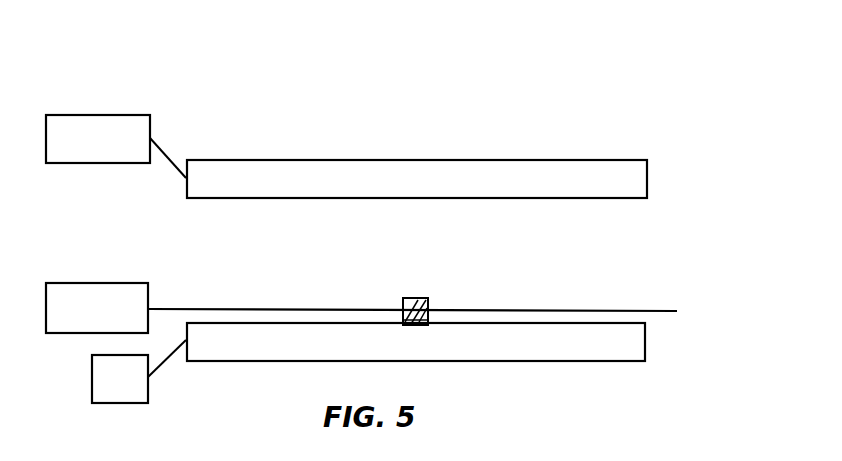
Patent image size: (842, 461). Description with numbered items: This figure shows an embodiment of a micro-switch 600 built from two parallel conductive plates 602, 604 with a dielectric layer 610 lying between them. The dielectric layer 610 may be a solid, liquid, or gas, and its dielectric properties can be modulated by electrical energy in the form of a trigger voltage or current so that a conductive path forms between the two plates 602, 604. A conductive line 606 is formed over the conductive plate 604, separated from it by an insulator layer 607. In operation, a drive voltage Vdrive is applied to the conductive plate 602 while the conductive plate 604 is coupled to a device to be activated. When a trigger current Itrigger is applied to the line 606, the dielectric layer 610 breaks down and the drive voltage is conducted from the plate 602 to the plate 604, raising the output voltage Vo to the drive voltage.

The micro-switch 600 is at (619, 130).
The conductive plate 602 is at (638, 185).
The conductive plate 604 is at (638, 346).
The conductive line 606 is at (428, 298).
The insulator layer 607 is at (423, 325).
The dielectric layer 610 is at (638, 257).